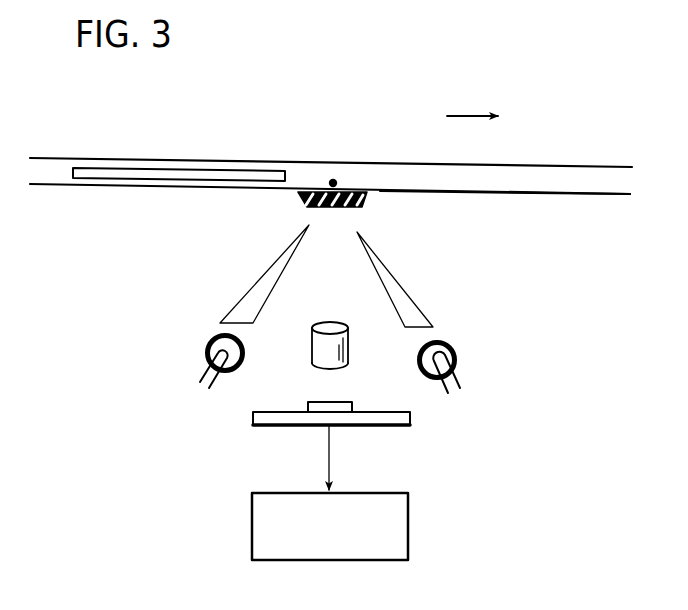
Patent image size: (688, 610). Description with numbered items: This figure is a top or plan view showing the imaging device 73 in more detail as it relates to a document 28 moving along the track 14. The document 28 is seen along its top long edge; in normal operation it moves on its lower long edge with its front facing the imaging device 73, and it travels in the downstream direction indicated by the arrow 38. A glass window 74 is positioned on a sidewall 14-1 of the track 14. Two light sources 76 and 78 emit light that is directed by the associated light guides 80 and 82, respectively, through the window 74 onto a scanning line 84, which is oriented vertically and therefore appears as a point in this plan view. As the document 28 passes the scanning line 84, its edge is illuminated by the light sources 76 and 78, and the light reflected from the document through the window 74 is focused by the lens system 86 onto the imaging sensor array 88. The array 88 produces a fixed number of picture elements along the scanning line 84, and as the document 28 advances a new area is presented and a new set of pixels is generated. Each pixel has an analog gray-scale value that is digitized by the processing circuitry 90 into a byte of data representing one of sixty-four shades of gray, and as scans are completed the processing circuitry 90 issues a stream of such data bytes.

The track 14 is at (567, 199).
The sidewall 14-1 is at (444, 194).
The document 28 is at (193, 168).
The arrow 38 is at (463, 116).
The imaging device 73 is at (203, 325).
The glass window 74 is at (299, 198).
The light source 76 is at (205, 358).
The light source 78 is at (457, 367).
The light guide 80 is at (238, 302).
The light guide 82 is at (415, 300).
The scanning line 84 is at (336, 180).
The lens system 86 is at (330, 322).
The imaging sensor array 88 is at (410, 425).
The processing circuitry 90 is at (408, 520).